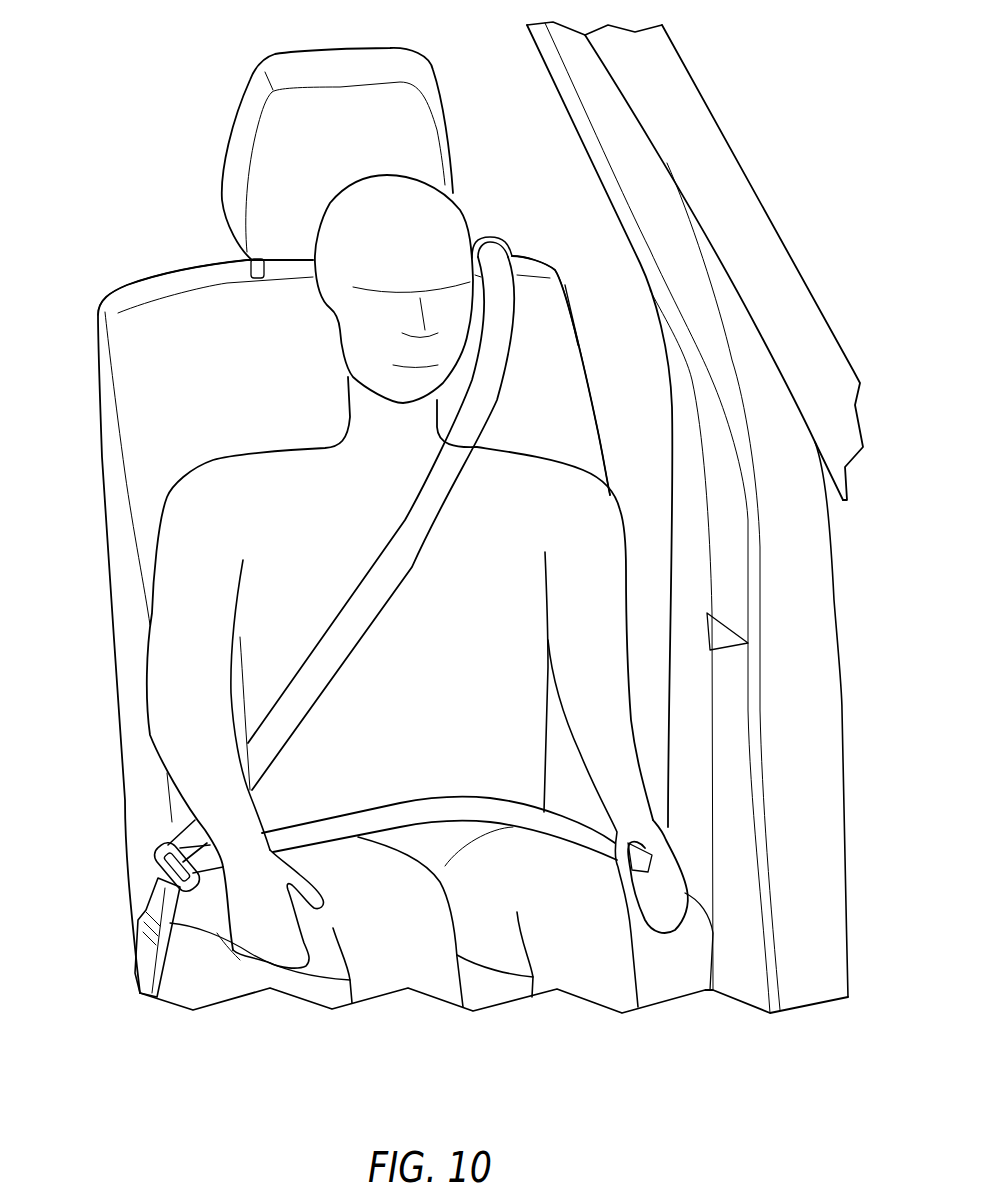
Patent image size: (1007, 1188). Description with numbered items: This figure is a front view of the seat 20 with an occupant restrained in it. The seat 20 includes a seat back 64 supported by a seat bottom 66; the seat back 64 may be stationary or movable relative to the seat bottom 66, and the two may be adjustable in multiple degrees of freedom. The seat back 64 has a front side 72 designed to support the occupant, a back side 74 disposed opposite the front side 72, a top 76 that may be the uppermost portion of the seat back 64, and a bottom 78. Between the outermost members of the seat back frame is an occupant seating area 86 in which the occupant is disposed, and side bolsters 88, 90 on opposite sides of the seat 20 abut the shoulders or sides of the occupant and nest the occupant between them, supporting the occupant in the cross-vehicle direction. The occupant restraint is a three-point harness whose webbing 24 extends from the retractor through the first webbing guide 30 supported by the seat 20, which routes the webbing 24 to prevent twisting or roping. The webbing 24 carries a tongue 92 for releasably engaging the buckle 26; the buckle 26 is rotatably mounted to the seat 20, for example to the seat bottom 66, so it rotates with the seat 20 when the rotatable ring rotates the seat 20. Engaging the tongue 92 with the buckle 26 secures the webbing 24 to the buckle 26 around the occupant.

The seat 20 is at (150, 82).
The webbing 24 is at (380, 587).
The buckle 26 is at (145, 968).
The first webbing guide 30 is at (481, 238).
The seat back 64 is at (125, 472).
The seat bottom 66 is at (200, 982).
The front side 72 is at (237, 372).
The back side 74 is at (168, 268).
The top 76 is at (548, 270).
The bottom 78 is at (140, 893).
The occupant seating area 86 is at (165, 397).
The side bolster 88 is at (550, 360).
The side bolster 90 is at (147, 342).
The tongue 92 is at (160, 860).